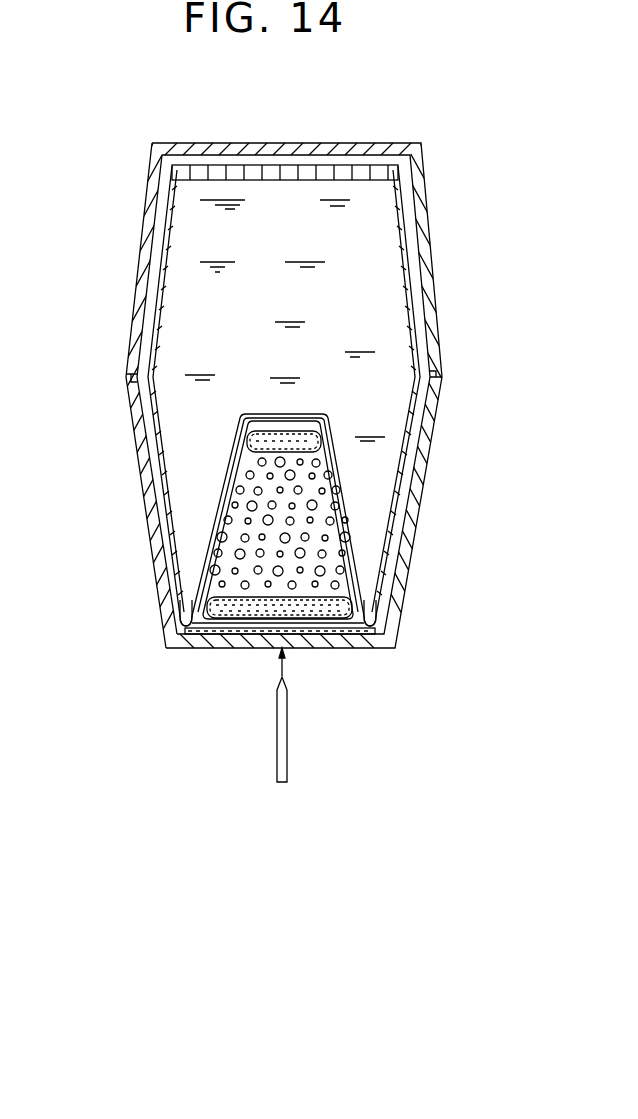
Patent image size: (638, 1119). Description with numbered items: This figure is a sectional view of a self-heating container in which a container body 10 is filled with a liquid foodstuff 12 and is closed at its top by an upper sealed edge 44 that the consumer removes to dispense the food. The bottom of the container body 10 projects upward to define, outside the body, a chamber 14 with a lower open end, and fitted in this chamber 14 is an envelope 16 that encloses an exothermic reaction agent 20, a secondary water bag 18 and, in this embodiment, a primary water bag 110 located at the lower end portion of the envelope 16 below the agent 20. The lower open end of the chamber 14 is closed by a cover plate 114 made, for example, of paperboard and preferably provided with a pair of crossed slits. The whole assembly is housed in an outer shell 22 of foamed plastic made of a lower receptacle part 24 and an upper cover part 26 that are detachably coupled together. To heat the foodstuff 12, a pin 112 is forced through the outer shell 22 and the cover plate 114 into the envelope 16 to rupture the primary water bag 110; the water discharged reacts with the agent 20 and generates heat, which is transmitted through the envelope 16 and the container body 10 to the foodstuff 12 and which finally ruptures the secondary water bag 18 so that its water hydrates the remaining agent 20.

The container body 10 is at (437, 280).
The liquid foodstuff 12 is at (370, 240).
The chamber 14 is at (330, 412).
The envelope 16 is at (366, 608).
The secondary water bag 18 is at (297, 432).
The exothermic reaction agent 20 is at (330, 508).
The outer shell 22 is at (114, 402).
The receptacle part 24 is at (142, 490).
The cover part 26 is at (142, 262).
The upper sealed edge 44 is at (325, 164).
The primary water bag 110 is at (215, 650).
The pin 112 is at (278, 737).
The cover plate 114 is at (363, 650).